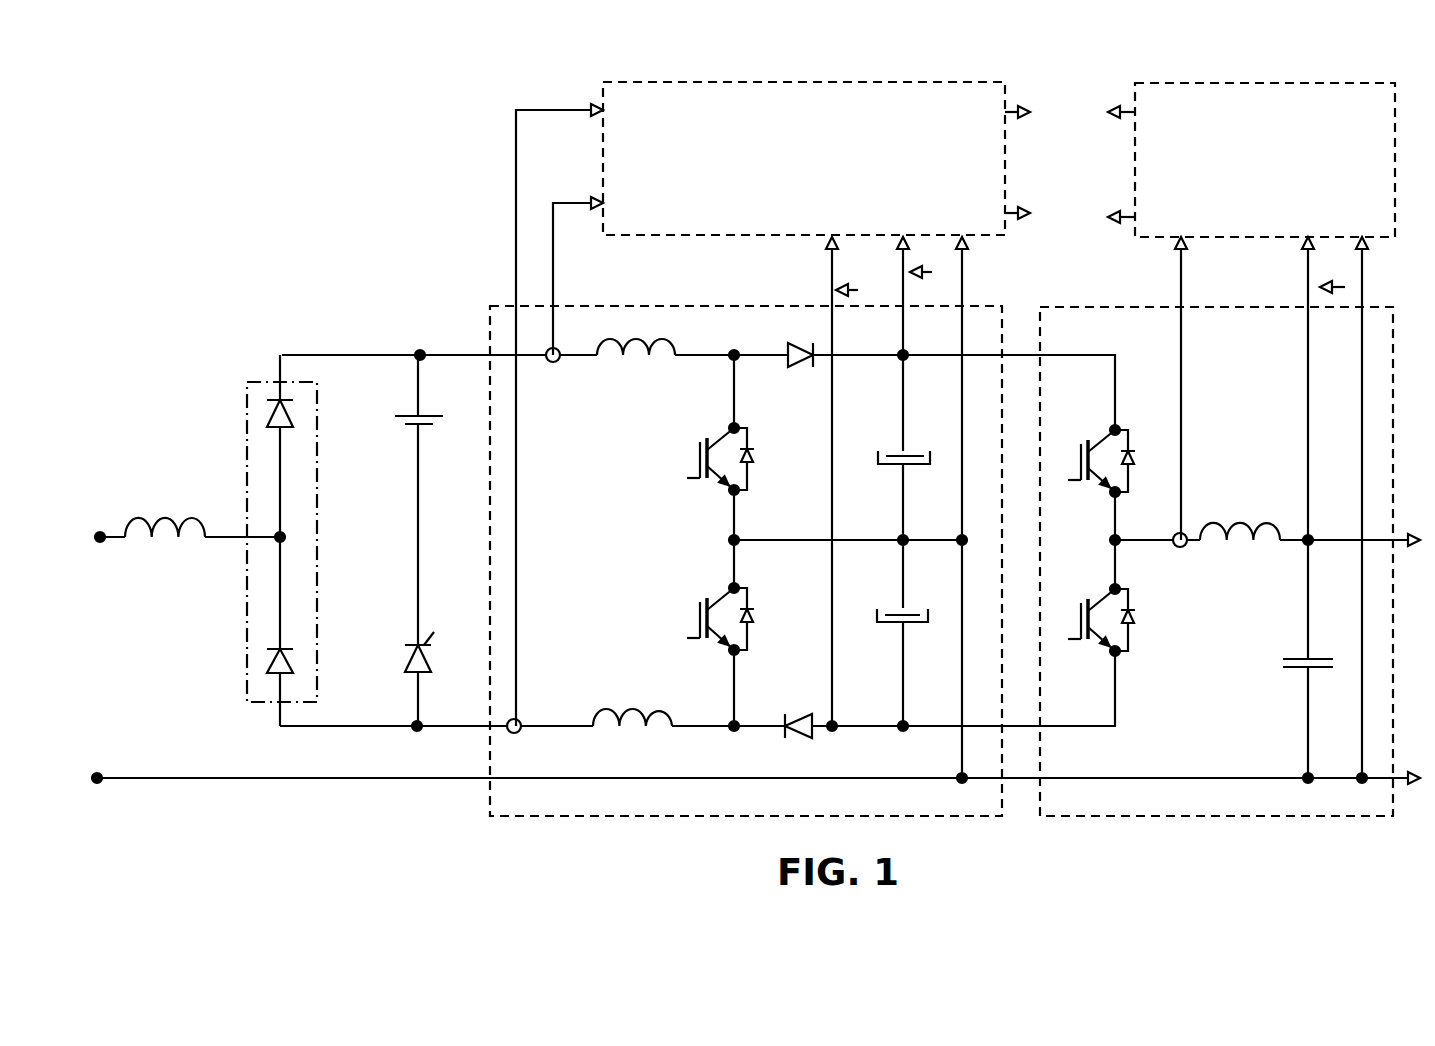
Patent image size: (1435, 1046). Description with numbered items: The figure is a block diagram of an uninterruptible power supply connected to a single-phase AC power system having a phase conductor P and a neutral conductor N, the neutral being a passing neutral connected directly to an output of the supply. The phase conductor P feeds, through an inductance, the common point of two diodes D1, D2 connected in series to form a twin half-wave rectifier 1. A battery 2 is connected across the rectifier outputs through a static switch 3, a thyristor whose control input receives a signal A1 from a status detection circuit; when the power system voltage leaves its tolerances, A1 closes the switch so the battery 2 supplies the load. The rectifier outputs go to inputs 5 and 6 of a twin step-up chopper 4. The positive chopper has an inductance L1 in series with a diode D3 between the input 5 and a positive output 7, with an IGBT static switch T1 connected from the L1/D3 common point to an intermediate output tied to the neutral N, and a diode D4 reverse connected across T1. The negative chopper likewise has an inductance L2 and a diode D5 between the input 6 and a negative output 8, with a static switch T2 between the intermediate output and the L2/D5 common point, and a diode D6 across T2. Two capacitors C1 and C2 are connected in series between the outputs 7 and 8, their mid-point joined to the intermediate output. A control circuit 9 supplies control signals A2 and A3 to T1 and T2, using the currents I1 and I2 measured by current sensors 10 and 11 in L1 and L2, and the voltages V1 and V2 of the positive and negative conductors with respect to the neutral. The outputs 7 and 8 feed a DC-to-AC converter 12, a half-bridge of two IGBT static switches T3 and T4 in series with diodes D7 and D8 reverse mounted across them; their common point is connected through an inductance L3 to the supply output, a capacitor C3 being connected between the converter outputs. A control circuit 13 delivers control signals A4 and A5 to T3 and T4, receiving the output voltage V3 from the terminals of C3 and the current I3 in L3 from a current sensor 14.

The rectifier 1 is at (250, 377).
The battery 2 is at (422, 412).
The static switch 3 is at (404, 656).
The twin step-up chopper 4 is at (974, 825).
The input 5 is at (491, 353).
The input 6 is at (487, 729).
The positive output 7 is at (1010, 361).
The negative output 8 is at (995, 731).
The control circuit 9 is at (760, 76).
The current sensor 10 is at (560, 348).
The current sensor 11 is at (520, 715).
The DC-to-AC converter 12 is at (1274, 825).
The control circuit 13 is at (1218, 80).
The current sensor 14 is at (1180, 548).
The phase conductor P is at (182, 511).
The neutral conductor N is at (751, 756).
The diode D1 is at (262, 414).
The diode D2 is at (262, 656).
The diode D3 is at (799, 338).
The diode D4 is at (762, 459).
The diode D5 is at (800, 739).
The diode D6 is at (759, 619).
The diode D7 is at (1141, 461).
The diode D8 is at (1143, 620).
The static switch T1 is at (697, 437).
The static switch T2 is at (699, 594).
The static switch T3 is at (1088, 434).
The static switch T4 is at (1082, 600).
The inductance L1 is at (636, 329).
The inductance L2 is at (632, 737).
The inductance L3 is at (1240, 514).
The capacitor C1 is at (907, 475).
The capacitor C2 is at (905, 631).
The capacitor C3 is at (1290, 661).
The control signal A1 is at (437, 627).
The control signal A2 is at (856, 286).
The control signal A3 is at (856, 416).
The control signal A4 is at (1087, 286).
The control signal A5 is at (1088, 415).
The current I1 is at (578, 262).
The current I2 is at (559, 400).
The current I3 is at (1191, 388).
The voltage V1 is at (925, 261).
The voltage V2 is at (858, 282).
The power supply output voltage V3 is at (1331, 275).